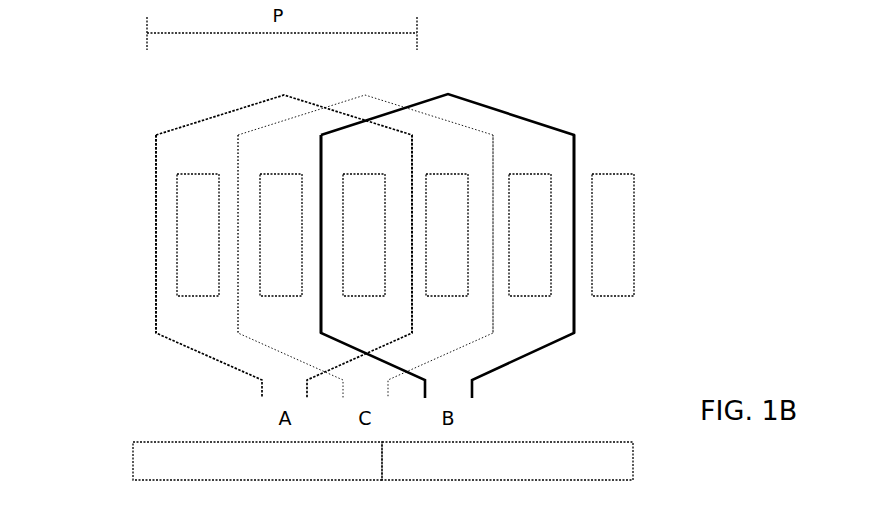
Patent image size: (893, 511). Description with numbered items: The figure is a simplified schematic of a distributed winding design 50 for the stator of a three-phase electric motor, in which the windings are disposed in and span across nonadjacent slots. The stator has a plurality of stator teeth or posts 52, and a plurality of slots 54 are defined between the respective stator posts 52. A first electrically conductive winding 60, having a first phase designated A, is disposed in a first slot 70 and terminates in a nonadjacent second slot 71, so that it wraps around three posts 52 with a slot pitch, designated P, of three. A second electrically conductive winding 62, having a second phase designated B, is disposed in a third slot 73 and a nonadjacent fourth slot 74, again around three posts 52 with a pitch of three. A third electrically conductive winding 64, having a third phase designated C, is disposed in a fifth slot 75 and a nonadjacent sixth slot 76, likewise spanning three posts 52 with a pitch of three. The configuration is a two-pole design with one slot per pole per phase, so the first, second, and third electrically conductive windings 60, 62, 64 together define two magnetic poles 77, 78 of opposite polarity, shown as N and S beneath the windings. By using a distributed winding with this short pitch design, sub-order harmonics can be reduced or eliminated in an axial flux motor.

The distributed winding design 50 is at (104, 80).
The stator teeth or posts 52 is at (535, 192).
The slots 54 is at (232, 185).
The first electrically conductive winding 60 is at (168, 340).
The second electrically conductive winding 62 is at (321, 300).
The third electrically conductive winding 64 is at (280, 350).
The first slot 70 is at (166, 220).
The second slot 71 is at (418, 192).
The third slot 73 is at (310, 210).
The fourth slot 74 is at (562, 285).
The fifth slot 75 is at (252, 188).
The sixth slot 76 is at (478, 198).
The magnetic pole 77 is at (133, 455).
The magnetic pole 78 is at (633, 455).